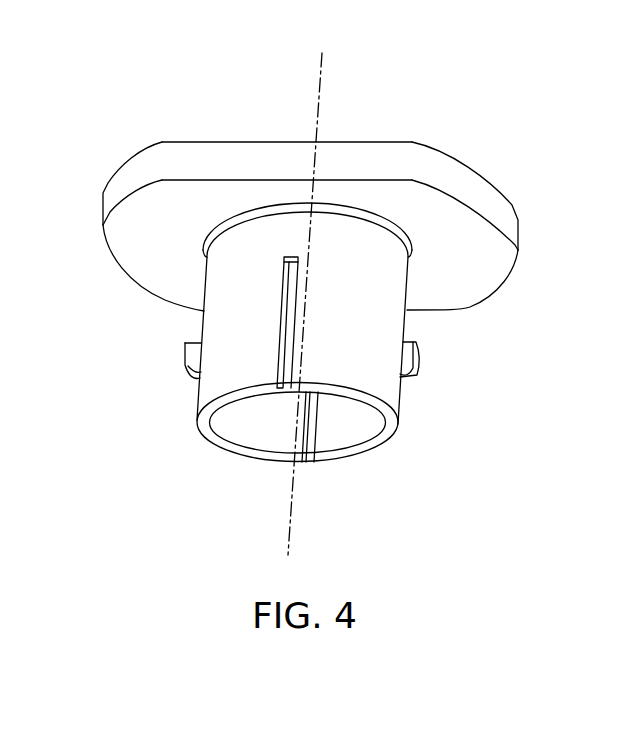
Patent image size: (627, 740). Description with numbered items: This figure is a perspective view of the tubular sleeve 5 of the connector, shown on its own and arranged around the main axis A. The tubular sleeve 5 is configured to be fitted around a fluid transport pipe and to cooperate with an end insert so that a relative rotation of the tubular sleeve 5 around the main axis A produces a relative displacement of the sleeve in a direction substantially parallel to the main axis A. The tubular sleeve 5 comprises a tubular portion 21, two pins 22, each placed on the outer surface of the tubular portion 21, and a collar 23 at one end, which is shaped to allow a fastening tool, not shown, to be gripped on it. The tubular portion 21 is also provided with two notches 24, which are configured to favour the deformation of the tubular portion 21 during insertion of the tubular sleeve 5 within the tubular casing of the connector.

The tubular sleeve 5 is at (326, 279).
The tubular portion 21 is at (235, 367).
The pins 22 is at (188, 352).
The collar 23 is at (192, 153).
The notches 24 is at (291, 352).
The main axis A is at (322, 77).